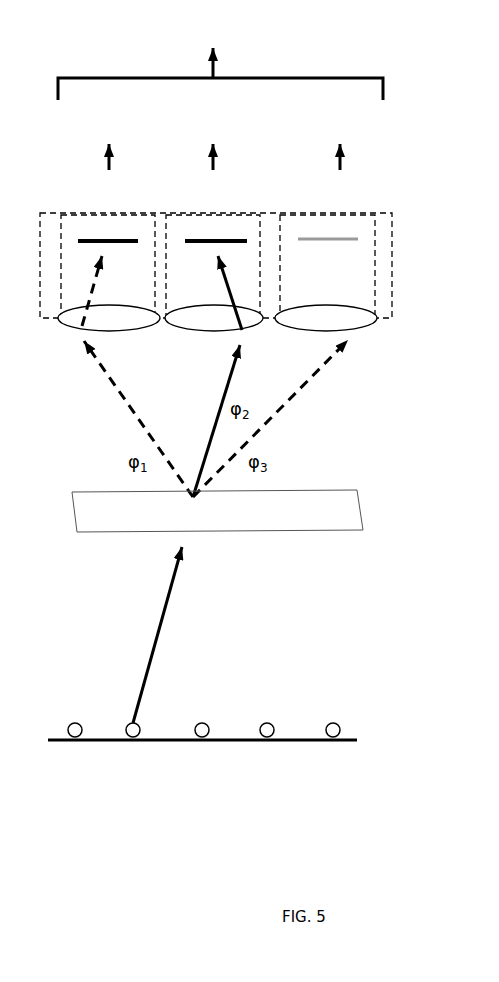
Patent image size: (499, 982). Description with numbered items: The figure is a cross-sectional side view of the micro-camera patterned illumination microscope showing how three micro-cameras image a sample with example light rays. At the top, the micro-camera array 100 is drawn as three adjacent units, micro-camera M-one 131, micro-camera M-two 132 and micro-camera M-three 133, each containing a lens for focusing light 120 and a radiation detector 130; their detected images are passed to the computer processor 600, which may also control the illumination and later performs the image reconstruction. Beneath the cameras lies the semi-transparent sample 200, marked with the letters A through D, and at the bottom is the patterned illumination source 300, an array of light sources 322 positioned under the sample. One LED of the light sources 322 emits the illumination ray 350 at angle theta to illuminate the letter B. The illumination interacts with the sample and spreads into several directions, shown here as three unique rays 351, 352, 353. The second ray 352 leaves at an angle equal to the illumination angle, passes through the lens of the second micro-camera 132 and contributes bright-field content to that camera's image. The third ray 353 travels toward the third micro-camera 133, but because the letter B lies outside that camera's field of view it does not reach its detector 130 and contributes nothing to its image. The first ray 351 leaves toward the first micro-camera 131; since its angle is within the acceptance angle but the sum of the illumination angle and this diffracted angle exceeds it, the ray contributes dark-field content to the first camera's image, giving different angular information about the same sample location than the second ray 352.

The computer processor 600 is at (220, 54).
The micro-camera array 100 is at (265, 240).
The lenses for focusing light 120 is at (395, 300).
The radiation detector 130 is at (365, 237).
The micro-camera M1 131 is at (108, 206).
The micro-camera M2 132 is at (213, 206).
The micro-camera M3 133 is at (327, 206).
The semi-transparent sample 200 is at (363, 527).
The patterned illumination source 300 is at (242, 741).
The LED light sources 322 is at (204, 754).
The illumination ray 350 is at (138, 635).
The first scattered ray 351 is at (125, 376).
The second scattered ray 352 is at (197, 376).
The third scattered ray 353 is at (277, 418).